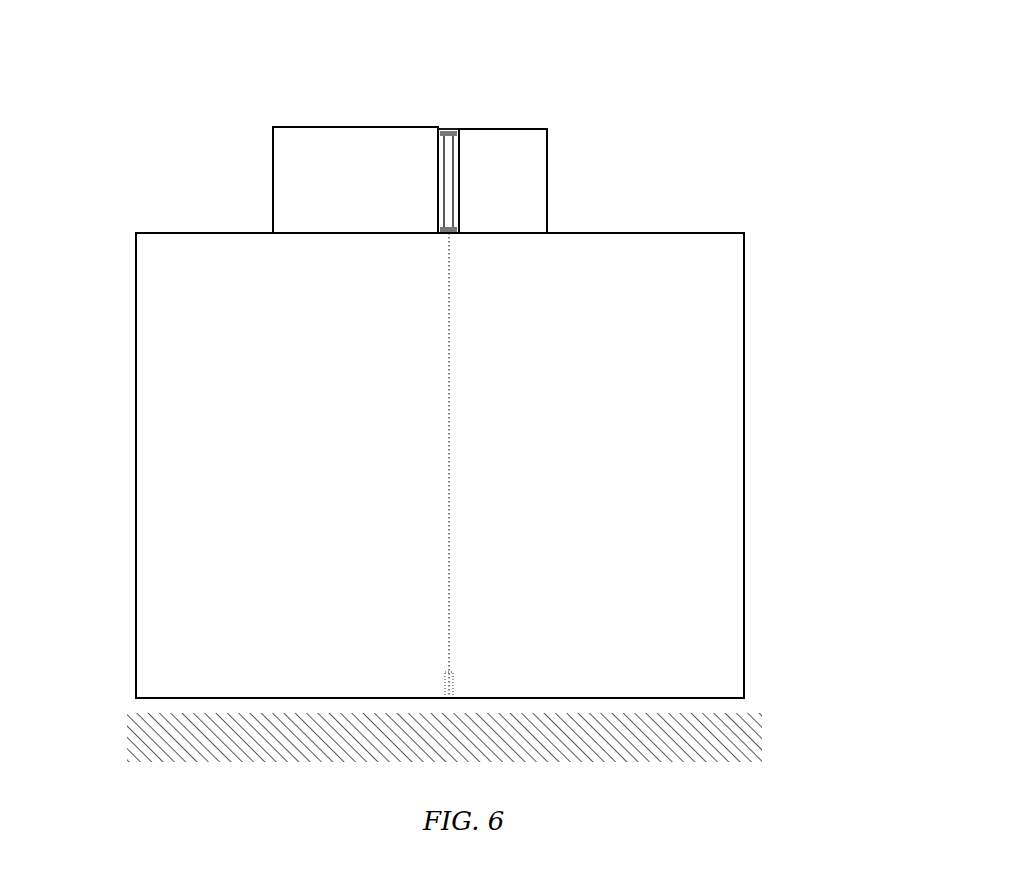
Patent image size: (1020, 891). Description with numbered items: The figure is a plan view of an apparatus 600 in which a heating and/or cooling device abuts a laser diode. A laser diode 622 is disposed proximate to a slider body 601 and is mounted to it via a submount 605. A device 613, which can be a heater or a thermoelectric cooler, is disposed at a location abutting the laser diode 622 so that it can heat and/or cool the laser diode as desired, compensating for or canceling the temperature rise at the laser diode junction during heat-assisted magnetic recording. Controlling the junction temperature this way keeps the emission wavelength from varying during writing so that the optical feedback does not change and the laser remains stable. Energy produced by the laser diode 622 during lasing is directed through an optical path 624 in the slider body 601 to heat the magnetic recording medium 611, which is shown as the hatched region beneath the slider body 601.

The apparatus 600 is at (694, 62).
The slider body 601 is at (136, 345).
The submount 605 is at (272, 165).
The device 613 is at (548, 154).
The laser diode 622 is at (435, 162).
The optical path 624 is at (450, 366).
The magnetic recording medium 611 is at (666, 745).